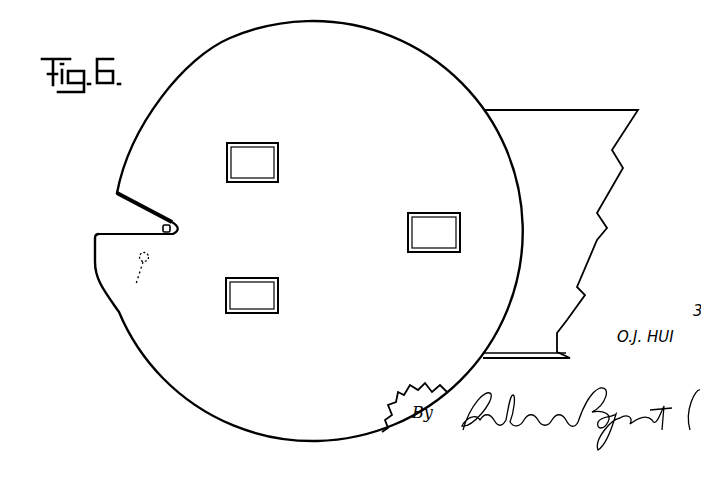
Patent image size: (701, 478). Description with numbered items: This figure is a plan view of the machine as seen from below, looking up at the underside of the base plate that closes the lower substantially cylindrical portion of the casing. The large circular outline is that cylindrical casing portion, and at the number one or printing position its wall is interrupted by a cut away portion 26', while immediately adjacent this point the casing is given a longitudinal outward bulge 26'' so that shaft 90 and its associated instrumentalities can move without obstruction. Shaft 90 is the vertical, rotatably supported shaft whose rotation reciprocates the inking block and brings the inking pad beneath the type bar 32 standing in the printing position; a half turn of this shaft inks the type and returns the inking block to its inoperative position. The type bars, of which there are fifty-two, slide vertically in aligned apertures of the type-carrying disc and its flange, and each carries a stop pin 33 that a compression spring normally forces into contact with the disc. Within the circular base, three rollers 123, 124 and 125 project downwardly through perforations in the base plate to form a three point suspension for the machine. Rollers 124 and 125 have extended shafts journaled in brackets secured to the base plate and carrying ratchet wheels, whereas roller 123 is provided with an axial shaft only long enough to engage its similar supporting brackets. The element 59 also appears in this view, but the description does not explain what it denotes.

The stop pin 33 is at (443, 85).
The plate 59 is at (545, 125).
The cut away portion 26' is at (125, 207).
The longitudinal outward bulge 26'' is at (77, 266).
The type bar 32 is at (160, 229).
The shaft 90 is at (145, 277).
The roller 123 is at (433, 241).
The roller 124 is at (252, 302).
The roller 125 is at (255, 153).